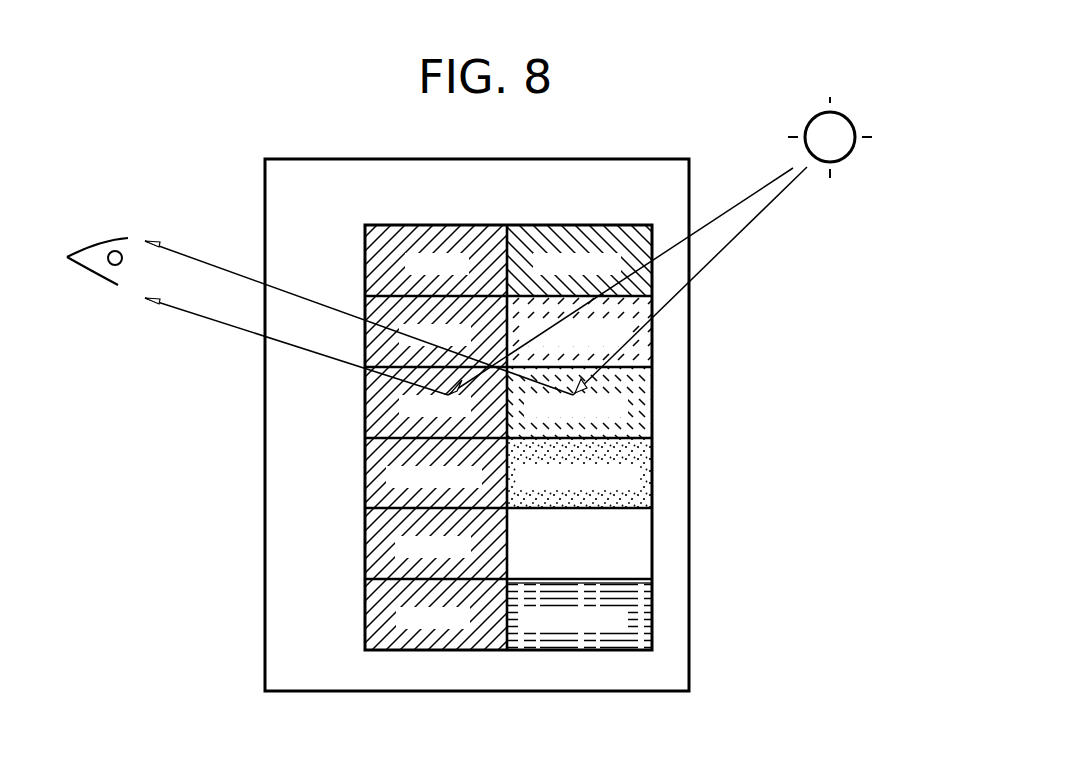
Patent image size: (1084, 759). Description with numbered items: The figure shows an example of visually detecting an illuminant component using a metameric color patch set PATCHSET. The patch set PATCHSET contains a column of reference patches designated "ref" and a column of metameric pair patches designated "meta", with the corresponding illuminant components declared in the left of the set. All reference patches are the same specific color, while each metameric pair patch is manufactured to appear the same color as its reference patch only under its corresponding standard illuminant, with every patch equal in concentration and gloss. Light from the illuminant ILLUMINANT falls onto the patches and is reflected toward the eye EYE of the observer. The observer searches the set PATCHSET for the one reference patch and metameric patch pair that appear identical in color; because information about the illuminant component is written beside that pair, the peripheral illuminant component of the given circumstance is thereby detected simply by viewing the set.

The eye EYE is at (317, 316).
The illuminant ILLUMINANT is at (699, 246).
The metameric color patch set PATCHSET is at (685, 630).